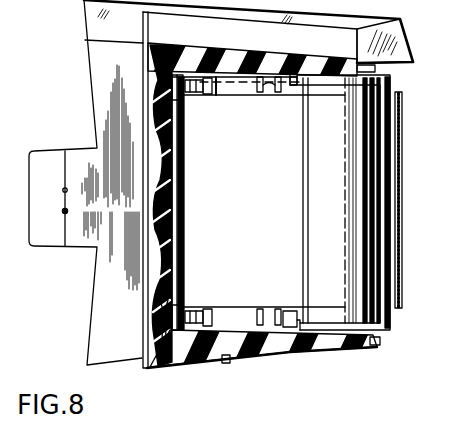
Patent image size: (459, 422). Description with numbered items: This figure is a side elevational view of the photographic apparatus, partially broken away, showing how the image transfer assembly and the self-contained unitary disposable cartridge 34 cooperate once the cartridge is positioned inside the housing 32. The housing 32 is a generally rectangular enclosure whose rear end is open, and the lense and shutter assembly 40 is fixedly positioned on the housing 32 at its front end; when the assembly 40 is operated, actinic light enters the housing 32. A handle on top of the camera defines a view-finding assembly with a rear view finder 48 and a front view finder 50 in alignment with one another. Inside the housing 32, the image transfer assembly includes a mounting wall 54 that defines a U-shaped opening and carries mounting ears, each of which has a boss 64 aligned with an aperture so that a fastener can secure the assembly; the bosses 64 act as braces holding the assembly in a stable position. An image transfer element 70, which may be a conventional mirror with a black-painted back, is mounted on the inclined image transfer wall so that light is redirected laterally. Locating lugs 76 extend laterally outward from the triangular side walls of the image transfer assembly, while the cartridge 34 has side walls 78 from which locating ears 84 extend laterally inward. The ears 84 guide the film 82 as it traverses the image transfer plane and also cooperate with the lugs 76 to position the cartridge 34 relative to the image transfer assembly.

The housing 32 is at (322, 339).
The self-contained unitary disposable cartridge 34 is at (400, 87).
The lense and shutter assembly 40 is at (52, 249).
The rear view finder 48 is at (392, 40).
The front view finder 50 is at (90, 22).
The mounting wall 54 is at (158, 363).
The boss 64 is at (186, 86).
The image transfer element 70 is at (291, 209).
The locating lugs 76 is at (265, 78).
The cartridge side walls 78 is at (188, 79).
The film 82 is at (403, 195).
The locating ears 84 is at (297, 76).